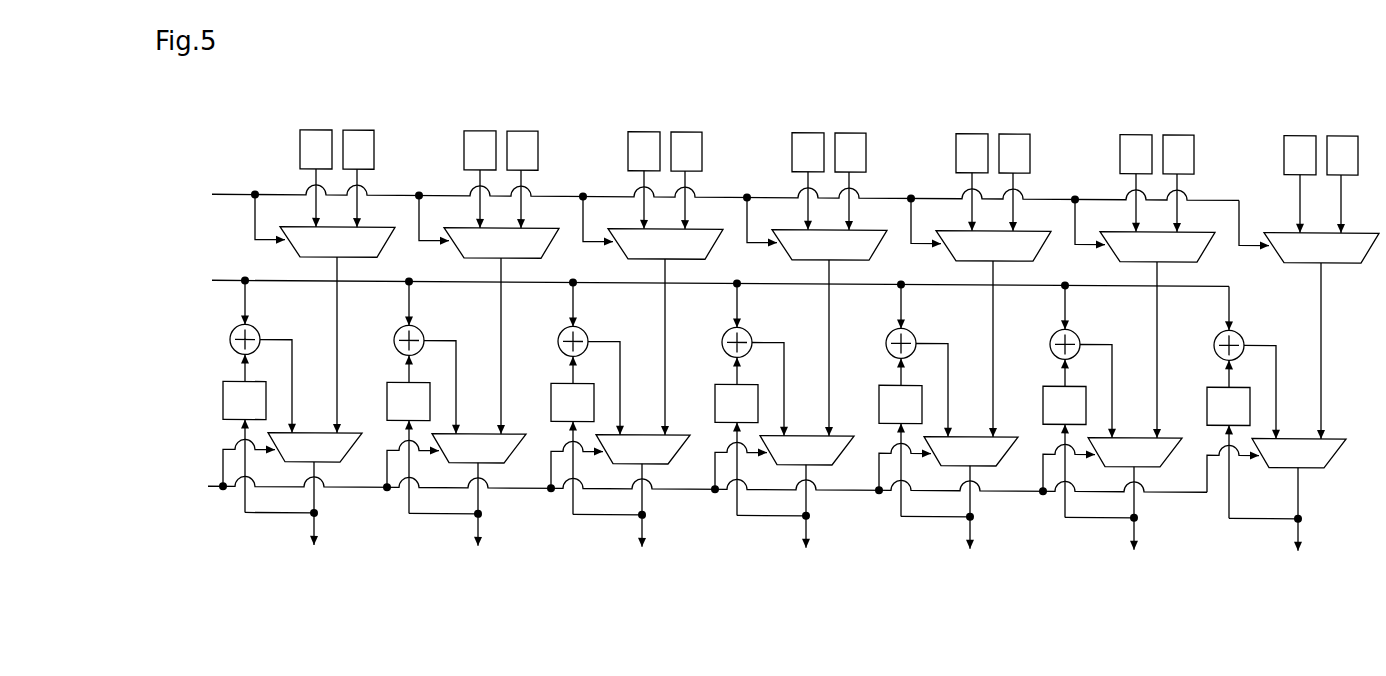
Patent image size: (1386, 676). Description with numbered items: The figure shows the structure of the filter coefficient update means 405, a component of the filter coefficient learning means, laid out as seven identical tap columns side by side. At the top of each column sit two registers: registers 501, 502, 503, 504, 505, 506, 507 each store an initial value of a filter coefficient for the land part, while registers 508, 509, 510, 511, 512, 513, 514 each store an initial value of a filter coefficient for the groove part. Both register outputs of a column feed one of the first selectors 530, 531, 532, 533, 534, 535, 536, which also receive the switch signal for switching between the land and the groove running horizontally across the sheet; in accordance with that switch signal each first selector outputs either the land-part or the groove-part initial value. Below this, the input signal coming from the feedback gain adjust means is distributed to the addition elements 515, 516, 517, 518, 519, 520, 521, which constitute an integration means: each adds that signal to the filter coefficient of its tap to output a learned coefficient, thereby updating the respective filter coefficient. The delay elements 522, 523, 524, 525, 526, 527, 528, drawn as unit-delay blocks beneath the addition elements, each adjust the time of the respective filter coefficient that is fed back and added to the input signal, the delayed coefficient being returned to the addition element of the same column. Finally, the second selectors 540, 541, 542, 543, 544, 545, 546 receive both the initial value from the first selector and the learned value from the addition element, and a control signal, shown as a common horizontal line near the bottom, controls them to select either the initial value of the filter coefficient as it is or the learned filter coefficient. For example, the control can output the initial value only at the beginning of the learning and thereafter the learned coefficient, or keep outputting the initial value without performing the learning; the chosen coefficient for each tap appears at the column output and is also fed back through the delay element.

The filter coefficient update means 405 is at (260, 538).
The register 501 is at (316, 130).
The register 502 is at (480, 130).
The register 503 is at (644, 130).
The register 504 is at (808, 130).
The register 505 is at (972, 130).
The register 506 is at (1136, 130).
The register 507 is at (1300, 130).
The register 508 is at (357, 130).
The register 509 is at (521, 130).
The register 510 is at (685, 130).
The register 511 is at (849, 130).
The register 512 is at (1013, 130).
The register 513 is at (1177, 130).
The register 514 is at (1341, 130).
The addition element 515 is at (258, 329).
The addition element 516 is at (422, 329).
The addition element 517 is at (586, 329).
The addition element 518 is at (750, 329).
The addition element 519 is at (914, 329).
The addition element 520 is at (1078, 329).
The addition element 521 is at (1242, 329).
The delay element 522 is at (232, 382).
The delay element 523 is at (396, 382).
The delay element 524 is at (560, 382).
The delay element 525 is at (724, 382).
The delay element 526 is at (888, 382).
The delay element 527 is at (1052, 382).
The delay element 528 is at (1216, 382).
The first selector 530 is at (323, 312).
The first selector 531 is at (487, 312).
The first selector 532 is at (651, 313).
The first selector 533 is at (815, 314).
The first selector 534 is at (979, 315).
The first selector 535 is at (1143, 316).
The first selector 536 is at (1309, 319).
The second selector 540 is at (290, 504).
The second selector 541 is at (454, 505).
The second selector 542 is at (618, 506).
The second selector 543 is at (782, 507).
The second selector 544 is at (946, 508).
The second selector 545 is at (1110, 509).
The second selector 546 is at (1276, 510).